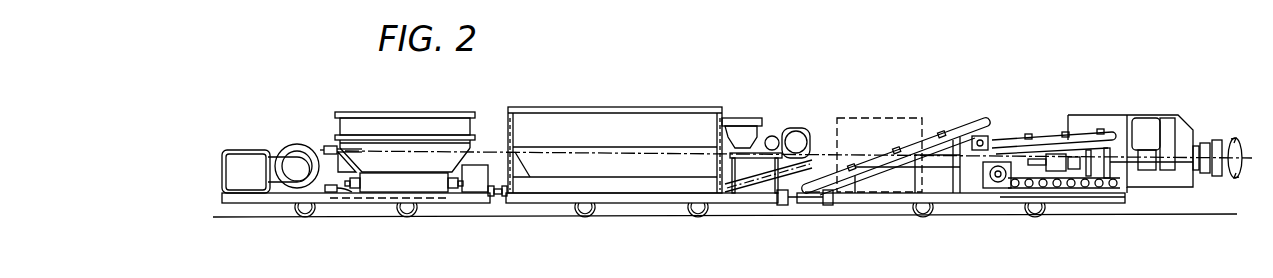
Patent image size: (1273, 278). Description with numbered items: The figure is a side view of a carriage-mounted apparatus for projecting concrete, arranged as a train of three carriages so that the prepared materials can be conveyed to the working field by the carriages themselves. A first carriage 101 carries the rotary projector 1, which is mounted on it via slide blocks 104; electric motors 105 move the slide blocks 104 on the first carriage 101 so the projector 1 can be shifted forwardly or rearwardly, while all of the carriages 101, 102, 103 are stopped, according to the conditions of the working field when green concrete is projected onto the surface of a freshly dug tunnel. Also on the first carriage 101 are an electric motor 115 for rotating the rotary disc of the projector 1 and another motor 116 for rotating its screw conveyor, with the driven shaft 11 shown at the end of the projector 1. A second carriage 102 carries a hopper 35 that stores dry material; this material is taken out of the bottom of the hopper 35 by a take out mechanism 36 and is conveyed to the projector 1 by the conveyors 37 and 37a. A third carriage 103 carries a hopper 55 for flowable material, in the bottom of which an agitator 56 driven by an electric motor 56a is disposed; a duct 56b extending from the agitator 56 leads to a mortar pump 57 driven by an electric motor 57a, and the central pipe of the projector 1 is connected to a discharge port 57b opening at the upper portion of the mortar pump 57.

The rotary projector 1 is at (1168, 113).
The rotary drive shaft 11 is at (1122, 163).
The hopper 35 is at (595, 118).
The take out mechanism 36 is at (750, 191).
The conveyor 37 is at (878, 157).
The conveyor 37a is at (1053, 130).
The hopper 55 is at (408, 122).
The agitator 56 is at (419, 185).
The electric motor 56a is at (472, 184).
The duct 56b is at (343, 197).
The mortar pump 57 is at (289, 155).
The electric motor 57a is at (236, 160).
The discharge port 57b is at (332, 148).
The first carriage 101 is at (1012, 198).
The second carriage 102 is at (638, 199).
The third carriage 103 is at (382, 199).
The slide blocks 104 is at (990, 190).
The electric motors 105 is at (983, 160).
The electric motor 115 is at (1150, 130).
The motor 116 is at (1058, 173).